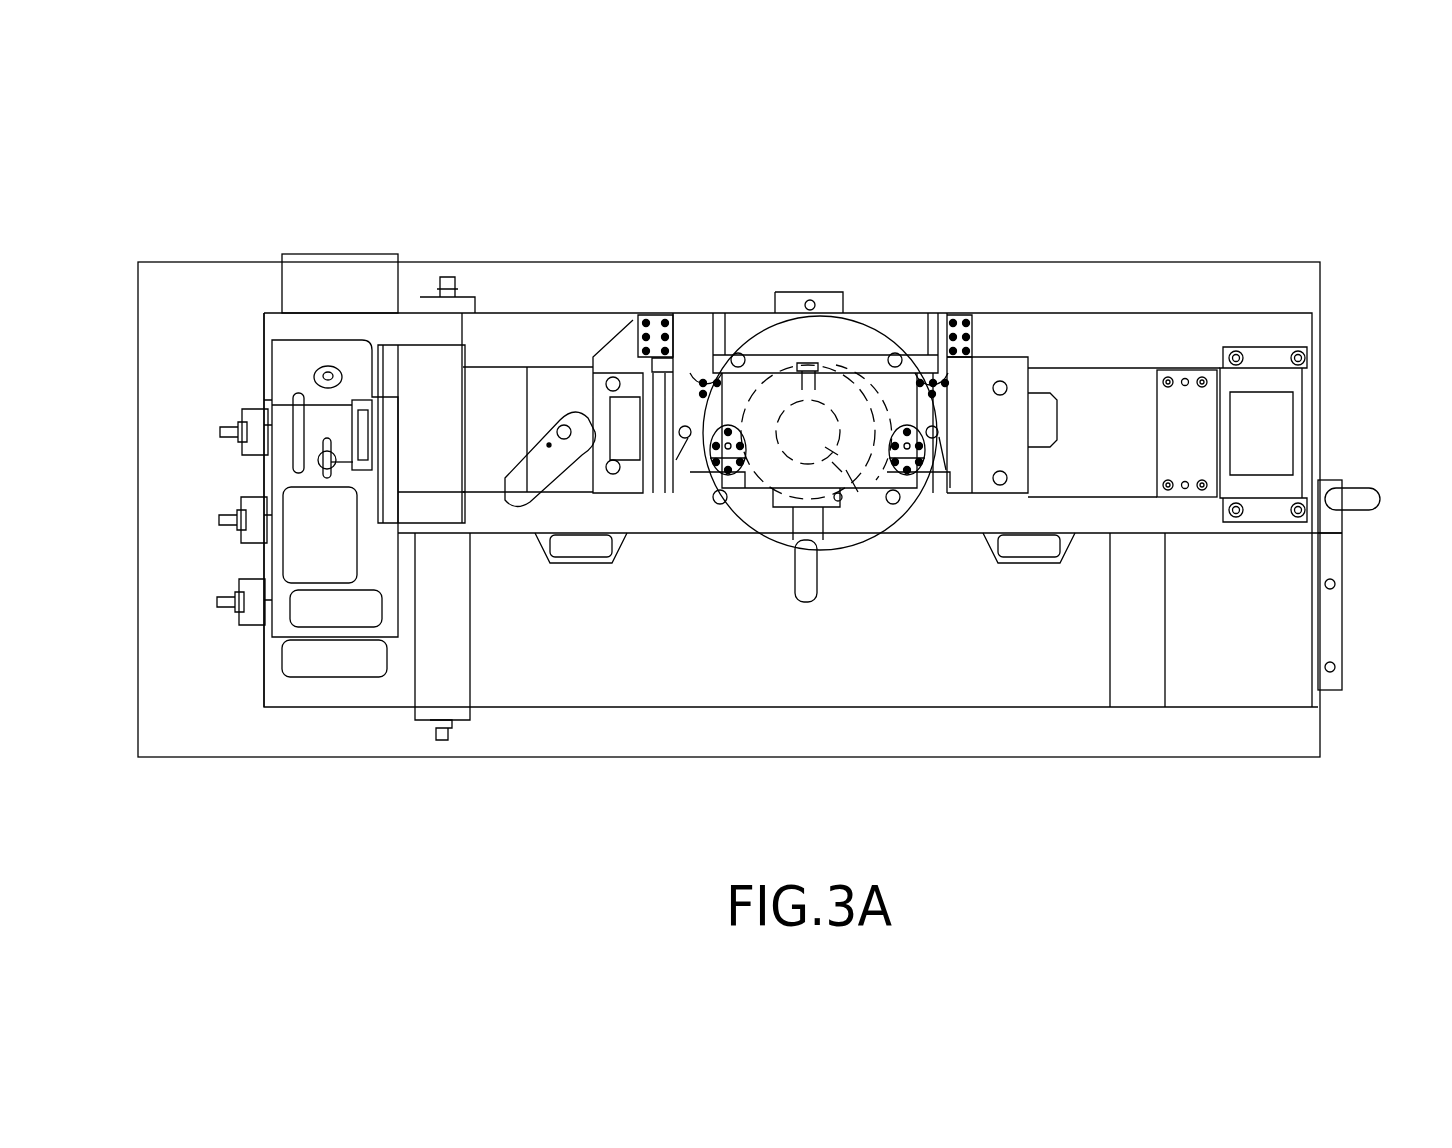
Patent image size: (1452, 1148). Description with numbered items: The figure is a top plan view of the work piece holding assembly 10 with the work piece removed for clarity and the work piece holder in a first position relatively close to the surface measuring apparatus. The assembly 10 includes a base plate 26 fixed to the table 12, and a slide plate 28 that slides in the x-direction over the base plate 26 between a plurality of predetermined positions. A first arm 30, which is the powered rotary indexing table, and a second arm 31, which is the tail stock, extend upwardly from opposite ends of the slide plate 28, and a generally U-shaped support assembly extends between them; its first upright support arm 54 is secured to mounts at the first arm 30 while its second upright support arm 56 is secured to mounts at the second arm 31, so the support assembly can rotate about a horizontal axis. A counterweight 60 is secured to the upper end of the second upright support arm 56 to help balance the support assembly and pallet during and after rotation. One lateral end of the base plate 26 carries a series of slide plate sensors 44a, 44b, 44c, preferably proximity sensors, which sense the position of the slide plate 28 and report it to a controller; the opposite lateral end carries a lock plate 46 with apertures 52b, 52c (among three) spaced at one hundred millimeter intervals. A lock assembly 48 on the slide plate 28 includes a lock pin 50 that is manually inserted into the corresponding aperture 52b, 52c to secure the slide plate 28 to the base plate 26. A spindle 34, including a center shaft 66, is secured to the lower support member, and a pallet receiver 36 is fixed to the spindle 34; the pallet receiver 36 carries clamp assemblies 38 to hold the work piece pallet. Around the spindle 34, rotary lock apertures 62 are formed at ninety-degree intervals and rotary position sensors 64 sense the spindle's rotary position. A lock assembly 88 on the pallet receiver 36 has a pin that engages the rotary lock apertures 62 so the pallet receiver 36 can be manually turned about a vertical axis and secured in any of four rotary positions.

The work piece holding assembly 10 is at (1080, 172).
The table 12 is at (1082, 745).
The base plate 26 is at (642, 683).
The slide plate 28 is at (502, 525).
The first arm 30 is at (330, 413).
The second arm 31 is at (1275, 405).
The spindle 34 is at (882, 308).
The pallet receiver 36 is at (1018, 393).
The clamp assemblies 38 is at (572, 418).
The slide plate sensor 44a is at (240, 432).
The slide plate sensor 44b is at (240, 520).
The slide plate sensor 44c is at (238, 602).
The lock plate 46 is at (1335, 642).
The lock assembly 48 is at (1332, 523).
The lock pin 50 is at (1357, 490).
The aperture 52b is at (1335, 588).
The aperture 52c is at (1340, 668).
The first upright support arm 54 is at (442, 357).
The second upright support arm 56 is at (1180, 497).
The counterweight 60 is at (1182, 368).
The rotary lock apertures 62 is at (812, 300).
The rotary position sensors 64 is at (740, 370).
The center shaft 66 is at (872, 520).
The lock assembly 88 is at (808, 585).